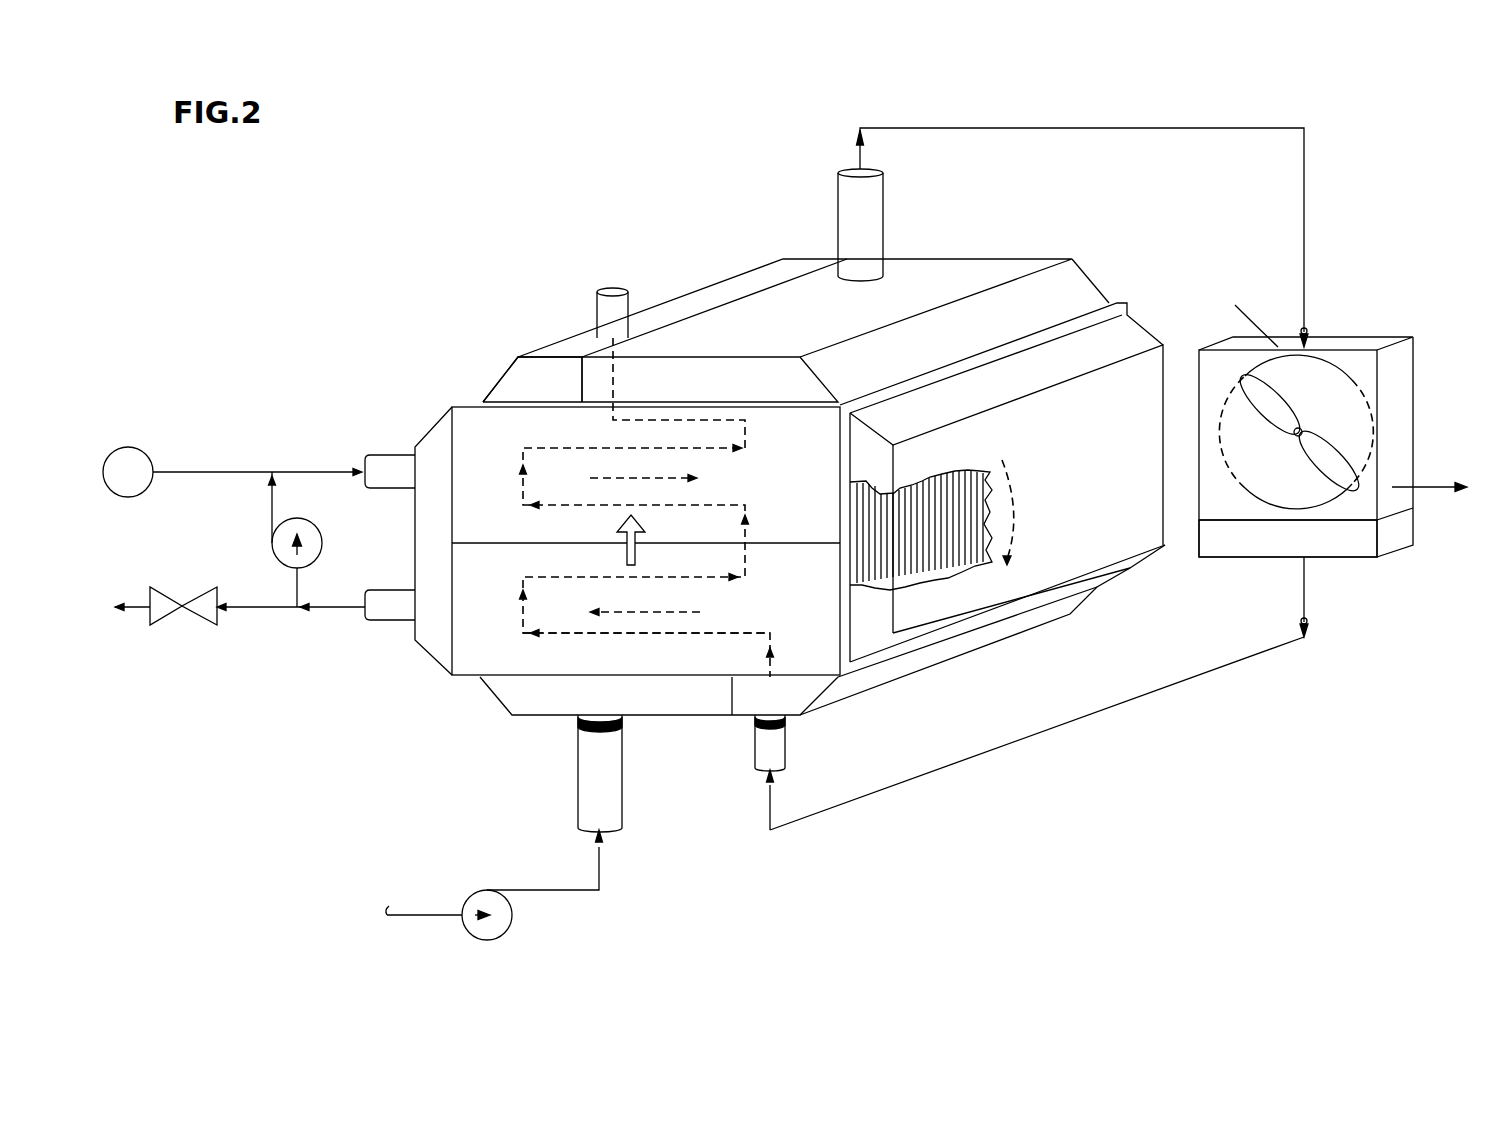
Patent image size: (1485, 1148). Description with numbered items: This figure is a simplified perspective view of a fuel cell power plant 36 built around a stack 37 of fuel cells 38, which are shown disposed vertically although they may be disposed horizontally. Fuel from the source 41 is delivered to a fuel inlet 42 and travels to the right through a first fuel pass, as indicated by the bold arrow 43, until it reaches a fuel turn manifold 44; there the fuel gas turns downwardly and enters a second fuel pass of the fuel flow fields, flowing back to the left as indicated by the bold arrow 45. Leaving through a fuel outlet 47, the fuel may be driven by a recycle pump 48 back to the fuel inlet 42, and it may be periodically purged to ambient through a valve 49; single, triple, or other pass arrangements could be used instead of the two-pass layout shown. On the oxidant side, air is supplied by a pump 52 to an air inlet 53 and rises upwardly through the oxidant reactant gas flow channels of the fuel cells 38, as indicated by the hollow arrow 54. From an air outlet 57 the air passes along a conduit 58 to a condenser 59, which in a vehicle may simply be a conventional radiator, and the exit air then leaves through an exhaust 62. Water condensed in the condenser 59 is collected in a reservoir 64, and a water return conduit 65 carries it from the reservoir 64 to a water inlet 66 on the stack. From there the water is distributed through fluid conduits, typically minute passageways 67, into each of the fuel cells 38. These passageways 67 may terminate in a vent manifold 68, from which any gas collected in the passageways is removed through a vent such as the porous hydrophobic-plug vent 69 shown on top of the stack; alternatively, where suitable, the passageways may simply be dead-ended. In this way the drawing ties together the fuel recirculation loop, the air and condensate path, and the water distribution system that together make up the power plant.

The fuel cell power plant 36 is at (513, 274).
The stack 37 is at (458, 395).
The fuel cells 38 is at (938, 518).
The source 41 is at (133, 447).
The fuel inlet 42 is at (378, 480).
The bold arrow 43 is at (628, 474).
The fuel turn manifold 44 is at (1128, 528).
The bold arrow 45 is at (685, 612).
The fuel outlet 47 is at (393, 597).
The recycle pump 48 is at (292, 518).
The valve 49 is at (183, 617).
The pump 52 is at (512, 905).
The air inlet 53 is at (623, 808).
The hollow arrow 54 is at (634, 548).
The air outlet 57 is at (878, 227).
The conduit 58 is at (1086, 130).
The condenser 59 is at (1352, 345).
The exhaust 62 is at (1435, 490).
The reservoir 64 is at (1220, 548).
The water return conduit 65 is at (1020, 740).
The water inlet 66 is at (785, 758).
The passageways 67 is at (625, 636).
The vent manifold 68 is at (510, 382).
The porous hydrophobic-plug vent 69 is at (603, 318).